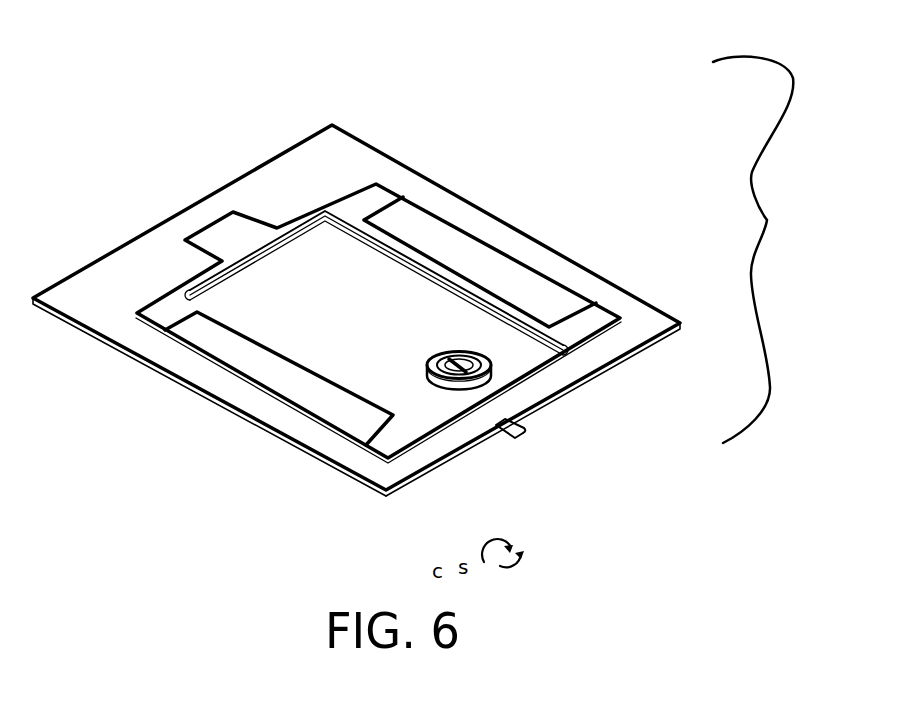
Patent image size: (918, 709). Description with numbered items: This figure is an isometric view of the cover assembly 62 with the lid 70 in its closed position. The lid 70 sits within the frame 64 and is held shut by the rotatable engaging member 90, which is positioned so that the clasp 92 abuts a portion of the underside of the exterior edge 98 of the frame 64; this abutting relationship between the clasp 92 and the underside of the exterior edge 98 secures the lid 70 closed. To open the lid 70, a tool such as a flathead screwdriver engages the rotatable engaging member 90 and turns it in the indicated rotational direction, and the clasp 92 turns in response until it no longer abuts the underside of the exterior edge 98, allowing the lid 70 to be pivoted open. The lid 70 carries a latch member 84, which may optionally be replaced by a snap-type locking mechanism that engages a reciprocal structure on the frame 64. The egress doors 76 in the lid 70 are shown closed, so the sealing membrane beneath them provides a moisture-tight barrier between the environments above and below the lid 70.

The cover assembly 62 is at (774, 250).
The frame 64 is at (316, 150).
The lid 70 is at (358, 192).
The egress doors 76 is at (233, 348).
The latch member 84 is at (444, 340).
The rotatable engaging member 90 is at (466, 355).
The clasp 92 is at (506, 432).
The exterior edge 98 is at (580, 394).